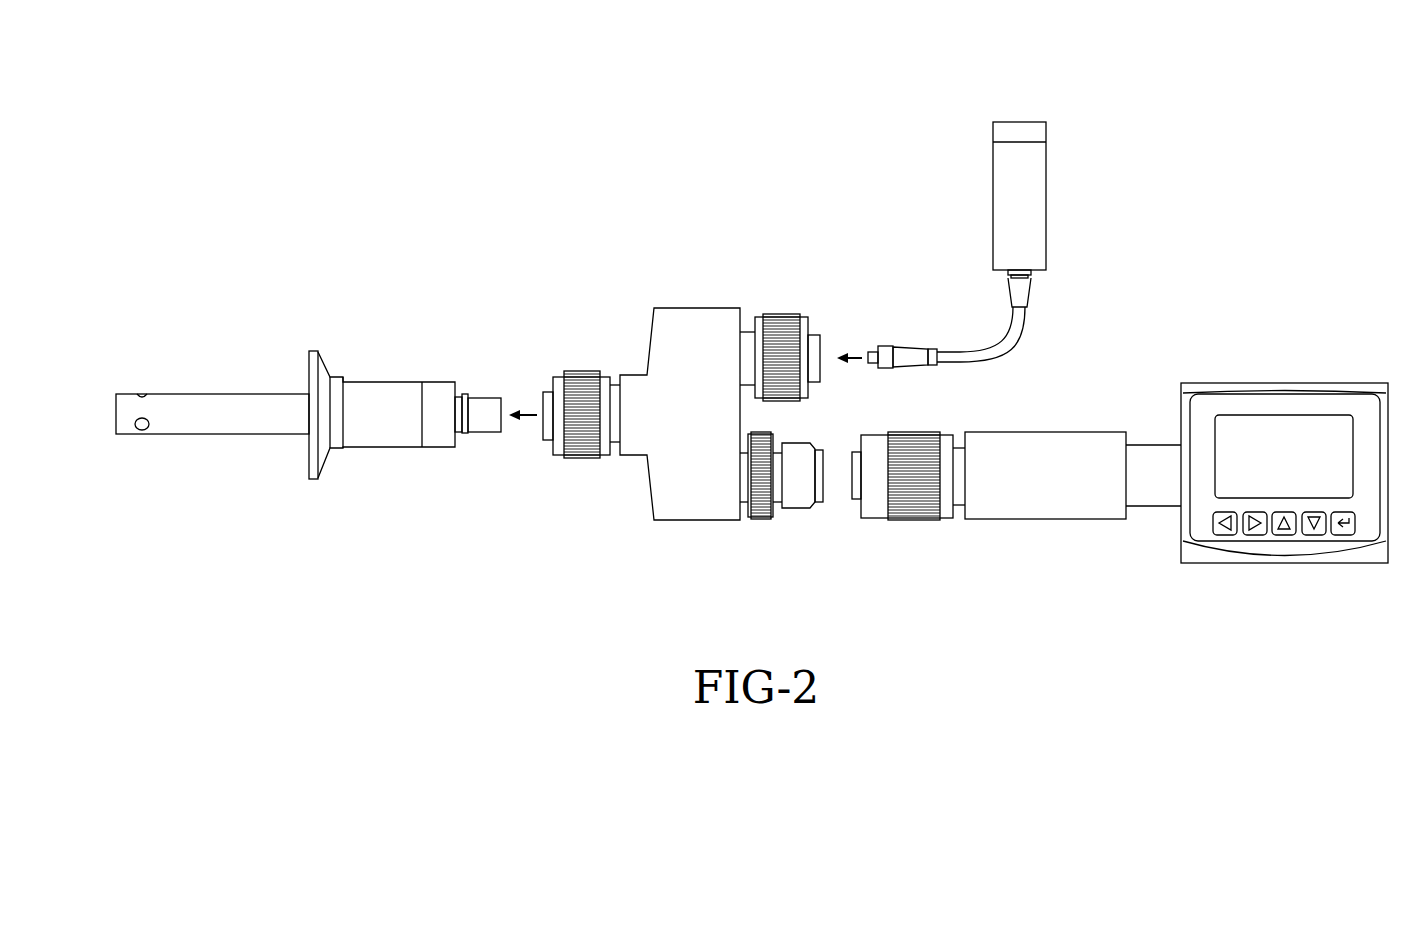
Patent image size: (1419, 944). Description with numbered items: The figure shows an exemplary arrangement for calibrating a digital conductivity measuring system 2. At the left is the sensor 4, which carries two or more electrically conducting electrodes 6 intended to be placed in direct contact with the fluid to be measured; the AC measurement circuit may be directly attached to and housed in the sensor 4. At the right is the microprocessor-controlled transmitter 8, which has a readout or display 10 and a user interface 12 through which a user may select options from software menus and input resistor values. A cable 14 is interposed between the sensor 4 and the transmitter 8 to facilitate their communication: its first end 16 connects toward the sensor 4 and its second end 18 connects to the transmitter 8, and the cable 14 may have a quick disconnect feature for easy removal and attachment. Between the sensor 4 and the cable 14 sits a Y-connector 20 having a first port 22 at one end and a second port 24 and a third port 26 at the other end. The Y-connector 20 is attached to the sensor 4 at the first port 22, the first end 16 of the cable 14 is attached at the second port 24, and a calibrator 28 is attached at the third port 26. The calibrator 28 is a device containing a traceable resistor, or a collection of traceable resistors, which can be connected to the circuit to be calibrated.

The digital conductivity measuring system 2 is at (511, 136).
The sensor 4 is at (294, 316).
The electrically conducting electrodes 6 is at (175, 420).
The transmitter 8 is at (1198, 361).
The display 10 is at (1320, 435).
The user interface 12 is at (1240, 540).
The cable 14 is at (1021, 540).
The first end 16 is at (877, 495).
The second end 18 is at (1162, 485).
The Y-connector 20 is at (672, 290).
The first port 22 is at (556, 380).
The second port 24 is at (797, 493).
The third port 26 is at (805, 328).
The calibrator 28 is at (1089, 168).